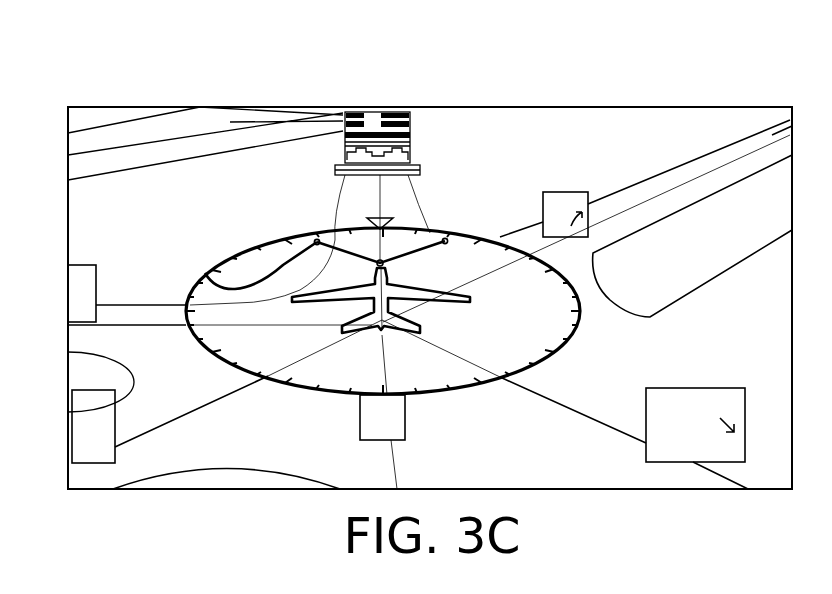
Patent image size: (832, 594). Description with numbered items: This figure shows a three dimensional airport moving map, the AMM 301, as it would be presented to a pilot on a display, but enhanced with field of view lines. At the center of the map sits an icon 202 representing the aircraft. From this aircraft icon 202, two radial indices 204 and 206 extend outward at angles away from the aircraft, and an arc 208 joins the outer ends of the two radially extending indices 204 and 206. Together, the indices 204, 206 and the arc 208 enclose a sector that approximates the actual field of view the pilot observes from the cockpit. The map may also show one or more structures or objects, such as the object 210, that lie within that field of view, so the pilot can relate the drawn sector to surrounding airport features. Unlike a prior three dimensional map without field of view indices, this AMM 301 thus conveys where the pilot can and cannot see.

The three dimensional AMM 301 is at (117, 56).
The icon 202 is at (370, 307).
The radial index 204 is at (205, 273).
The radial index 206 is at (430, 250).
The arc 208 is at (330, 233).
The object 210 is at (412, 157).